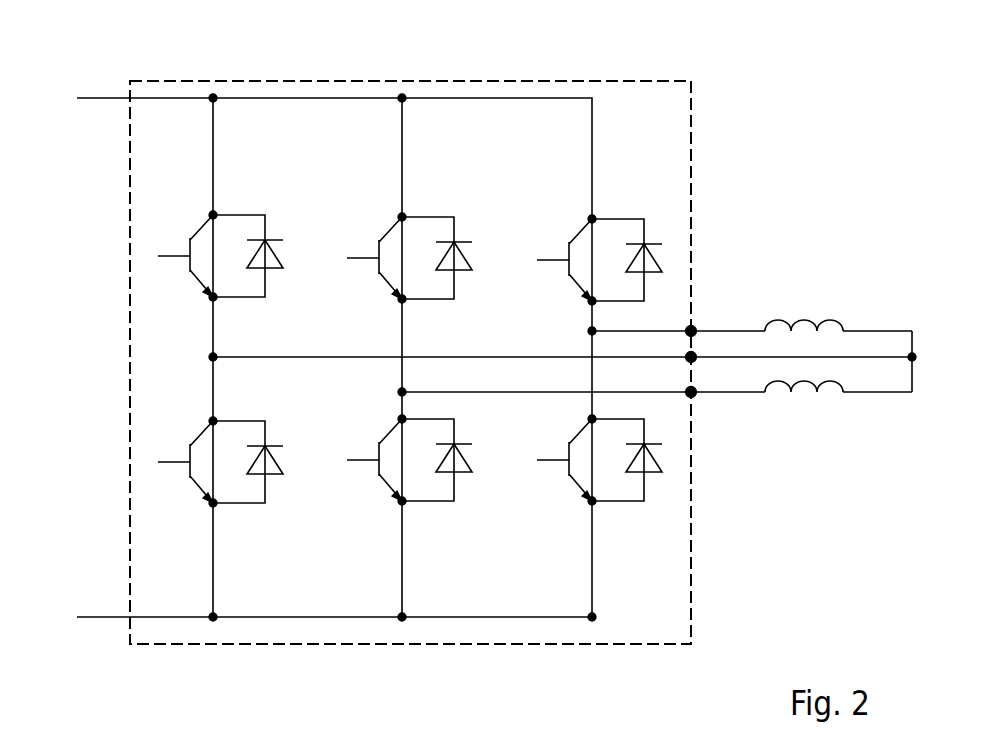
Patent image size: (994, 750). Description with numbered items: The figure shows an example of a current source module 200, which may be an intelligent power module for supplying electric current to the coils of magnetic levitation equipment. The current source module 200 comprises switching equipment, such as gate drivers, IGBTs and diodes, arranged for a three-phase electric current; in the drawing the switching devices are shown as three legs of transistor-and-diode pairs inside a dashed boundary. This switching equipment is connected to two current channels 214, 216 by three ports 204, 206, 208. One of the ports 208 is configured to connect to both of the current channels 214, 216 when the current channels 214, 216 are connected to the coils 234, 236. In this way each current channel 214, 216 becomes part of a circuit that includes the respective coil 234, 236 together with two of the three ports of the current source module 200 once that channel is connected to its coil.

The current source module 200 is at (126, 79).
The port 204 is at (696, 326).
The port 206 is at (700, 402).
The port 208 is at (710, 351).
The current channel 214 is at (608, 327).
The current channel 216 is at (552, 396).
The coil 234 is at (821, 321).
The coil 236 is at (808, 402).